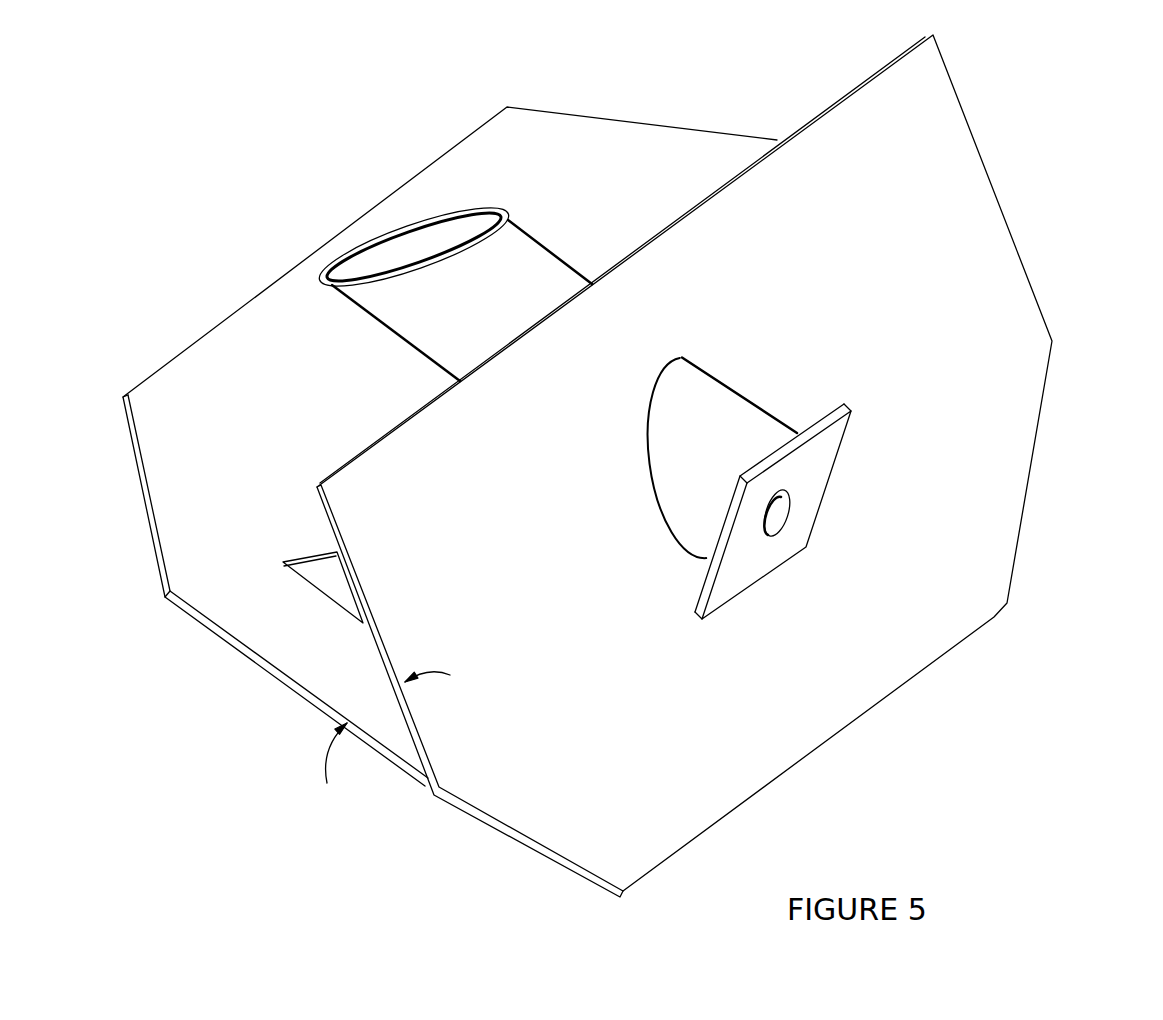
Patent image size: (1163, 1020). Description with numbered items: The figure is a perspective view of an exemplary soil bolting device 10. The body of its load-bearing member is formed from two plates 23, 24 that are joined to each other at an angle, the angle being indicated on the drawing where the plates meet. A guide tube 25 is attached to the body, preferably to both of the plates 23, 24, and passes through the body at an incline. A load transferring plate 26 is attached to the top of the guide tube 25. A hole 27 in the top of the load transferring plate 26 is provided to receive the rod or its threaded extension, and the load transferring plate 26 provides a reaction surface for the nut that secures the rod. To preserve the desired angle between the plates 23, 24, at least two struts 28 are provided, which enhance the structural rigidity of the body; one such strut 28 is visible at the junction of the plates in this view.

The soil bolting device 10 is at (980, 613).
The plate 23 is at (728, 466).
The plate 24 is at (427, 446).
The guide tube 25 is at (437, 236).
The load transferring plate 26 is at (830, 482).
The hole 27 is at (659, 626).
The strut 28 is at (255, 652).